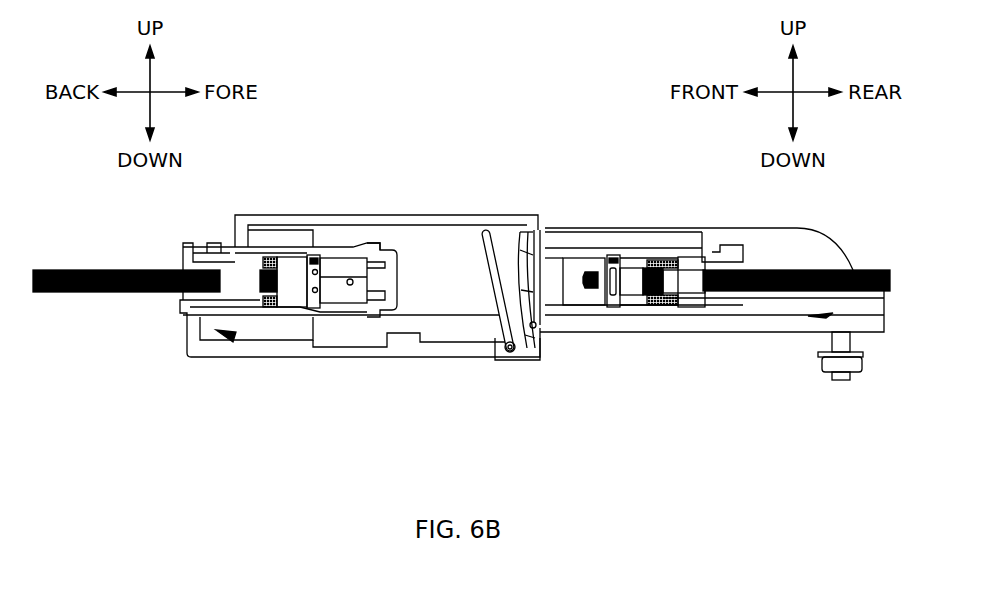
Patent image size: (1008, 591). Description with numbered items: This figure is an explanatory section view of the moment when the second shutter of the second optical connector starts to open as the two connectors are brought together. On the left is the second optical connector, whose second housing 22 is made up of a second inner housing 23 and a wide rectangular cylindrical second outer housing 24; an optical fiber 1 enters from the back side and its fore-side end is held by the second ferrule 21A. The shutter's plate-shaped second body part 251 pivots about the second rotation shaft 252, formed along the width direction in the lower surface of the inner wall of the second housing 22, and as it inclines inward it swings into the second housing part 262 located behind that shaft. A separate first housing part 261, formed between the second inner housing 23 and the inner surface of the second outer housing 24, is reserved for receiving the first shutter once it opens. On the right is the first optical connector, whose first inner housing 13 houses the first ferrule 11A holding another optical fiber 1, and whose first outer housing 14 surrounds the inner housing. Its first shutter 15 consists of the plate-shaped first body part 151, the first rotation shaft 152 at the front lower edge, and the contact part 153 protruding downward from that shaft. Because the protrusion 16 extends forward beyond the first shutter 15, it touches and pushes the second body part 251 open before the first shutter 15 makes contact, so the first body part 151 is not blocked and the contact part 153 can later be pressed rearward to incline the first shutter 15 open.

The optical fiber 1 is at (75, 270).
The first ferrule 11A is at (586, 270).
The first inner housing 13 is at (780, 303).
The first outer housing 14 is at (680, 232).
The first shutter 15 is at (538, 265).
The first body part 151 is at (547, 335).
The first rotation shaft 152 is at (542, 345).
The contact part 153 is at (538, 347).
The protrusion 16 is at (507, 230).
The second ferrule 21A is at (345, 297).
The second housing 22 is at (243, 447).
The second inner housing 23 is at (277, 312).
The second outer housing 24 is at (343, 213).
The second body part 251 is at (490, 234).
The second rotation shaft 252 is at (506, 353).
The first housing part 261 is at (235, 337).
The second housing part 262 is at (431, 343).